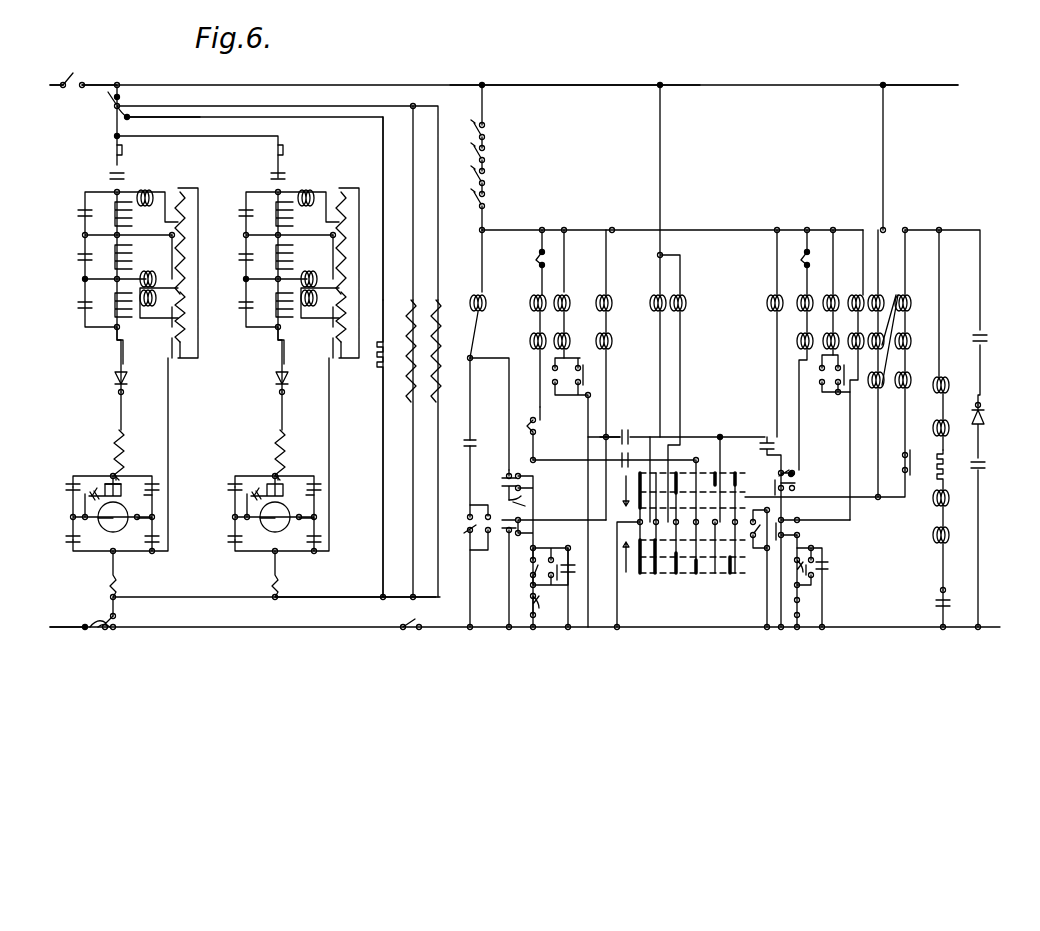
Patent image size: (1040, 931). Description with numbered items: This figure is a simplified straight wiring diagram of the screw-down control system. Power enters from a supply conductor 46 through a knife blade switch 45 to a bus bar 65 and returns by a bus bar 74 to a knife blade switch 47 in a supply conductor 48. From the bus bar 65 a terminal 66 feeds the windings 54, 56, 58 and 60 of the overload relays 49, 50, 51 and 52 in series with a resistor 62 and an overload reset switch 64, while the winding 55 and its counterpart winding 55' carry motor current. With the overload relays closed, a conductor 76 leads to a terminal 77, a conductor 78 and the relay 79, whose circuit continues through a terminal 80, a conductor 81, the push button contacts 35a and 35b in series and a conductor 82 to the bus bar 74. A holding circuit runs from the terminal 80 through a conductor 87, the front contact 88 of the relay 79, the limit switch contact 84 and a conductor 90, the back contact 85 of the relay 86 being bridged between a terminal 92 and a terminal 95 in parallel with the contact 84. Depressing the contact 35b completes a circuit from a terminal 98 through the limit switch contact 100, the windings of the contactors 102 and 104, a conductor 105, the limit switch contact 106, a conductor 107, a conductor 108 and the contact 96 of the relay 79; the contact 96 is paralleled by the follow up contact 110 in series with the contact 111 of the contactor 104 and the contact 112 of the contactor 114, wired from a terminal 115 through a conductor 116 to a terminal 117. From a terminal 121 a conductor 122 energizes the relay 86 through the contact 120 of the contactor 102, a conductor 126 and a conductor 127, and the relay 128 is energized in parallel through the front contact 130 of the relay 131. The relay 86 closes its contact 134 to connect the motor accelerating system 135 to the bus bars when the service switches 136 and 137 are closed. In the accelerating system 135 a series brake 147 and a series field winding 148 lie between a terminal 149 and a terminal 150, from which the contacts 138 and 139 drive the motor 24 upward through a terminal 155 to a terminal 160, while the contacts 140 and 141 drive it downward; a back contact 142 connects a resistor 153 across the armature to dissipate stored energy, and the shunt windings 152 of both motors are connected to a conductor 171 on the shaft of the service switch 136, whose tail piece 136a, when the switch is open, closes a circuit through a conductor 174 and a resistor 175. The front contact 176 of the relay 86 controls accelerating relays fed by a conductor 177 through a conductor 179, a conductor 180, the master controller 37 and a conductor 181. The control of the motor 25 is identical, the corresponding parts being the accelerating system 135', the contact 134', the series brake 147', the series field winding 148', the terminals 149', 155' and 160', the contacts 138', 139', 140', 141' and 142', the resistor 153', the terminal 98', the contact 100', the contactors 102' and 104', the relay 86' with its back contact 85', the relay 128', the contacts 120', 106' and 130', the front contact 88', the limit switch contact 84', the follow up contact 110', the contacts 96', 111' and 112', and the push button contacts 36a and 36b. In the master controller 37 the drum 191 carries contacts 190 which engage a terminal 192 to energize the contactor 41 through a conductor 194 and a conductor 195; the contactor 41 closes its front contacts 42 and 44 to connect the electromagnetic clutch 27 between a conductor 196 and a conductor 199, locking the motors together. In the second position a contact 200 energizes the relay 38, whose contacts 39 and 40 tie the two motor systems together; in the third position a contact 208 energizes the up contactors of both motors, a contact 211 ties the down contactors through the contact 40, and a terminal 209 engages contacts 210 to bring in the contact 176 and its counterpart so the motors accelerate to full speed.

The bus bar 65 is at (570, 85).
The terminal 66 is at (885, 85).
The supply conductor 46 is at (55, 85).
The knife blade switch 45 is at (72, 78).
The service switch 136 is at (108, 98).
The tail piece 136a is at (130, 117).
The winding 55 is at (134, 151).
The front contact 134 is at (135, 169).
The winding 55' is at (296, 151).
The front contact 134' is at (299, 169).
The motor accelerating system 135 is at (158, 276).
The terminal 149 is at (140, 361).
The series brake 147 is at (140, 379).
The series field winding 148 is at (141, 436).
The back contact 142 is at (126, 461).
The motor 24 is at (120, 512).
The terminal 150 is at (113, 483).
The resistor 153 is at (151, 461).
The contact 139 is at (179, 462).
The contact 141 is at (51, 473).
The contact 138 is at (50, 532).
The terminal 155 is at (170, 516).
The contact 140 is at (179, 461).
The terminal 160 is at (130, 585).
The service switch 137 is at (417, 614).
The supply conductor 48 is at (60, 628).
The knife blade switch 47 is at (100, 630).
The motor accelerating system 135' is at (330, 276).
The terminal 149' is at (304, 361).
The series brake 147' is at (304, 379).
The series field winding 148' is at (304, 436).
The motor 25 is at (283, 512).
The back contact 142' is at (224, 487).
The contact 141' is at (233, 471).
The resistor 153' is at (297, 479).
The contact 139' is at (340, 475).
The terminal 155' is at (337, 505).
The contact 140' is at (345, 454).
The contact 138' is at (233, 560).
The terminal 160' is at (356, 575).
The conductor 174 is at (353, 157).
The conductor 171 is at (405, 110).
The resistor 175 is at (385, 350).
The overload relay 49 is at (484, 135).
The overload relay 50 is at (484, 158).
The overload relay 51 is at (484, 181).
The overload relay 52 is at (484, 204).
The terminal 77 is at (484, 229).
The terminal 98 is at (553, 219).
The conductor 76 is at (585, 230).
The contact 100 is at (529, 261).
The terminal 121 is at (565, 238).
The conductor 122 is at (565, 268).
The shunt windings 152 is at (494, 285).
The conductor 78 is at (483, 260).
The relay 79 is at (483, 290).
The contactor 102 is at (524, 293).
The contactor 104 is at (522, 359).
The relay 86 is at (572, 293).
The relay 128 is at (579, 333).
The contactor 131 is at (608, 295).
The contactor 114 is at (608, 350).
The contact 120 is at (579, 484).
The front contact 130 is at (611, 374).
The conductor 126 is at (590, 396).
The terminal 80 is at (472, 357).
The conductor 81 is at (506, 380).
The conductor 87 is at (469, 400).
The front contact 88 is at (457, 436).
The push button contact 35b is at (492, 466).
The terminal 95 is at (469, 490).
The contact 84 is at (467, 515).
The back contact 85 is at (453, 522).
The terminal 92 is at (468, 545).
The conductor 90 is at (468, 575).
The push button contact 35a is at (504, 522).
The conductor 116 is at (520, 532).
The conductor 82 is at (507, 580).
The conductor 105 is at (537, 418).
The contact 106 is at (556, 438).
The conductor 107 is at (542, 452).
The conductor 108 is at (534, 510).
The terminal 115 is at (543, 522).
The contact 111 is at (535, 566).
The terminal 117 is at (546, 583).
The contact 96 is at (586, 588).
The contact 112 is at (593, 584).
The follow up contact 110 is at (522, 625).
The conductor 127 is at (592, 437).
The contact 40 is at (630, 437).
The contact 39 is at (630, 460).
The relay 38 is at (686, 303).
The contactor 41 is at (663, 292).
The conductor 194 is at (661, 200).
The conductor 195 is at (661, 390).
The contacts 190 is at (680, 465).
The contact 211 is at (728, 462).
The master controller 37 is at (679, 548).
The terminal 192 is at (658, 525).
The terminal 209 is at (735, 525).
The contacts 210 is at (743, 473).
The contact 208 is at (695, 555).
The contact 200 is at (676, 575).
The drum 191 is at (700, 573).
The conductor 181 is at (618, 590).
The bus bar 74 is at (668, 630).
The conductor 177 is at (884, 165).
The terminal 98' is at (819, 247).
The contact 100' is at (823, 262).
The contactor 102' is at (790, 333).
The relay 86' is at (818, 281).
The relay 128' is at (849, 318).
The contactor 104' is at (789, 390).
The contact 120' is at (809, 437).
The contact 106' is at (787, 407).
The front contact 130' is at (827, 404).
The front contact 176 is at (870, 290).
The conductor 179 is at (895, 410).
The conductor 180 is at (858, 500).
The front contact 88' is at (762, 532).
The push button contact 36b is at (795, 478).
The push button contact 36a is at (790, 535).
The back contact 85' is at (741, 569).
The contact 84' is at (777, 643).
The follow up contact 110' is at (818, 594).
The contact 96' is at (835, 586).
The contact 112' is at (855, 571).
The contact 111' is at (846, 592).
The conductor 196 is at (981, 265).
The front contact 42 is at (987, 340).
The electromagnetic clutch 27 is at (986, 418).
The front contact 44 is at (986, 465).
The conductor 199 is at (980, 555).
The winding 54 is at (950, 385).
The winding 56 is at (956, 428).
The resistor 62 is at (956, 462).
The winding 58 is at (960, 492).
The winding 60 is at (956, 535).
The overload reset switch 64 is at (956, 603).